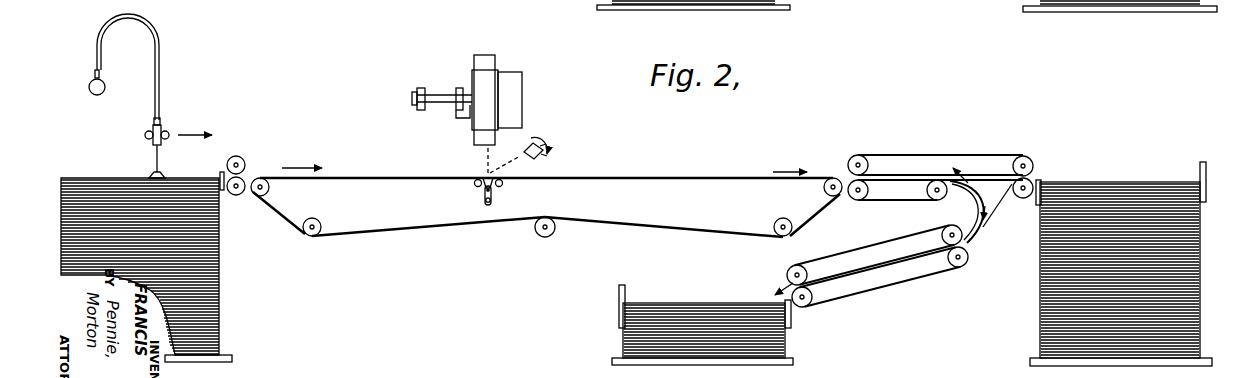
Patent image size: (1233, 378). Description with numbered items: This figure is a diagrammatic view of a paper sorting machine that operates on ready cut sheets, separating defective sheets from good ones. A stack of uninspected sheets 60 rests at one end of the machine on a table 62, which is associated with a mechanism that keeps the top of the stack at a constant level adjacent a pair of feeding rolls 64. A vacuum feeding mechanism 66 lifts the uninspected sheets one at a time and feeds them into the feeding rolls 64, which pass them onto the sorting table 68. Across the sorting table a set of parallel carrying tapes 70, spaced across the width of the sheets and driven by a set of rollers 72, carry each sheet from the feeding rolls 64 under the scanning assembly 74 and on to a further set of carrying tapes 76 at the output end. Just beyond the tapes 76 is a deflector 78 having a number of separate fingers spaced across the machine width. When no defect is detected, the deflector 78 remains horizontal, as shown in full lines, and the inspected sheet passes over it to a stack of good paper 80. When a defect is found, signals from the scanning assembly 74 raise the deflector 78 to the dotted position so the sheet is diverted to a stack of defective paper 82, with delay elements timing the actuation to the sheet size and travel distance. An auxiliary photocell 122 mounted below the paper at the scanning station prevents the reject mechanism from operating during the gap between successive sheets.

The supply stack of sheets 60 is at (113, 178).
The stack support plate 62 is at (230, 355).
The feed rollers 64 is at (245, 161).
The suction feed arm 66 is at (163, 109).
The conveyor belt 68 is at (389, 160).
The lower belt run 70 is at (410, 232).
The belt rollers 72 is at (322, 236).
The cutting wheel 74 is at (474, 136).
The delivery conveyor belts 76 is at (869, 201).
The curved guide 78 is at (954, 189).
The delivery stack 80 is at (1112, 181).
The second delivery stack 82 is at (660, 303).
The nozzle bracket 122 is at (505, 192).